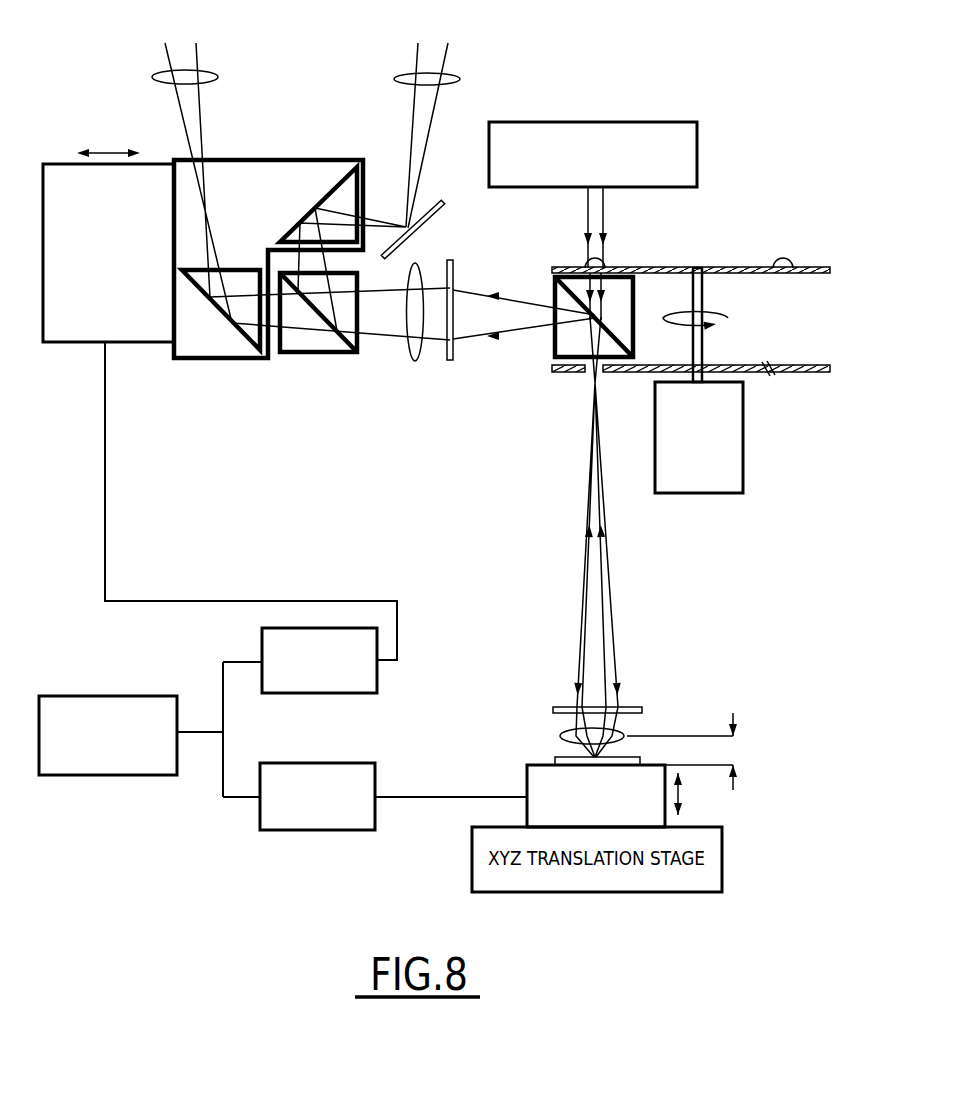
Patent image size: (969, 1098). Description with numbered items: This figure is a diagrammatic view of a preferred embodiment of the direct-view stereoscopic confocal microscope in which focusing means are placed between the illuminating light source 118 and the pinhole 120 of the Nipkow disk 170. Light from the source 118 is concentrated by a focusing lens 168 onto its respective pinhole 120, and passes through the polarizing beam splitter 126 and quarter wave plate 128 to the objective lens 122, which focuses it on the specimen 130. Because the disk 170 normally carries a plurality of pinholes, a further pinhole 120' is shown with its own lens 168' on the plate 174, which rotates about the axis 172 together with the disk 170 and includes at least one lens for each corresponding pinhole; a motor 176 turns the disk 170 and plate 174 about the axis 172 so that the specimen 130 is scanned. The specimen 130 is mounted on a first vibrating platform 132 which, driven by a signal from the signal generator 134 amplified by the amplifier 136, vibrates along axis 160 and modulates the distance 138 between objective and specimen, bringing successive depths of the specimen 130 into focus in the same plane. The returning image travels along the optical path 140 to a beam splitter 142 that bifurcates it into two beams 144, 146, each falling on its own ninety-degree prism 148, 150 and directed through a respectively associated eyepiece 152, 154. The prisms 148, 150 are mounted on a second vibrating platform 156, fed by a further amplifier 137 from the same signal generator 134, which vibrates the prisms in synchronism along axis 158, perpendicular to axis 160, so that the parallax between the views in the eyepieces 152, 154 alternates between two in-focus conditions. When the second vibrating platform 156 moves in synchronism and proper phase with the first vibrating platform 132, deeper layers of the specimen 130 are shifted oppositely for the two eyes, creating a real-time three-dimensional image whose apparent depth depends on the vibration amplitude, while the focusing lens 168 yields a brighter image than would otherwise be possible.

The illuminating light source 118 is at (633, 119).
The pinhole 120 is at (672, 341).
The lower rotating plate 120' is at (691, 388).
The objective lens 122 is at (623, 735).
The polarizing beam splitter 126 is at (637, 292).
The quarter wave plate 128 is at (631, 705).
The specimen 130 is at (555, 758).
The first vibrating platform 132 is at (527, 769).
The signal generator 134 is at (142, 778).
The amplifier 136 is at (316, 832).
The amplifier 137 is at (378, 690).
The distance 138 is at (728, 745).
The optical path 140 is at (462, 337).
The beam splitter 142 is at (308, 352).
The beam 144 is at (184, 142).
The beam 146 is at (411, 109).
The 90 degree prism 148 is at (223, 348).
The 90 degree prism 150 is at (337, 180).
The eyepiece 152 is at (211, 69).
The eyepiece 154 is at (454, 77).
The second vibrating platform 156 is at (84, 344).
The axis 158 is at (132, 146).
The axis 160 is at (683, 795).
The focusing lens 168 is at (563, 242).
The reference mark 168' is at (794, 229).
The disk 170 is at (772, 365).
The axis 172 is at (705, 348).
The plate 174 is at (713, 266).
The motor 176 is at (745, 480).